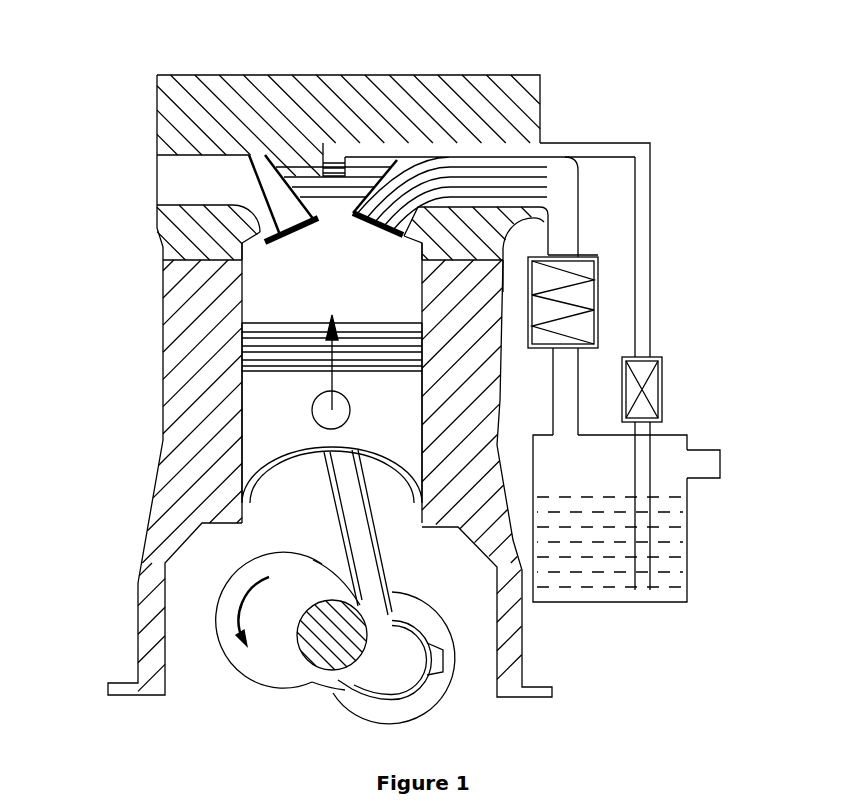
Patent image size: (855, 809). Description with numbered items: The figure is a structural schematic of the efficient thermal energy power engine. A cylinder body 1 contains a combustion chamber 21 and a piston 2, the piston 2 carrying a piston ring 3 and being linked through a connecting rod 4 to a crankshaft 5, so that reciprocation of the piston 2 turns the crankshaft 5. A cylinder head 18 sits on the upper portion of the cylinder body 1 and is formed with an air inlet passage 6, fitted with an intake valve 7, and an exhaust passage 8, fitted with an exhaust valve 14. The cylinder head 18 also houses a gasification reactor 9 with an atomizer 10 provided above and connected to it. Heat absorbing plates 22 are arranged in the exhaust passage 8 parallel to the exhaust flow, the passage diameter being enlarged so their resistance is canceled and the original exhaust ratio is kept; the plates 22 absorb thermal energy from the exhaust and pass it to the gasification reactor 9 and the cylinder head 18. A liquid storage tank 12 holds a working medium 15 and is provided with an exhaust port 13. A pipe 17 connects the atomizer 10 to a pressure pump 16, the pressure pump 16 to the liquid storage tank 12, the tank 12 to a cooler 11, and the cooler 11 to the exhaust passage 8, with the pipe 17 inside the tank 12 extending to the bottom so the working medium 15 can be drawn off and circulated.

The cylinder body 1 is at (255, 376).
The piston 2 is at (195, 445).
The piston ring 3 is at (215, 390).
The connecting rod 4 is at (360, 520).
The crankshaft 5 is at (262, 655).
The air inlet passage 6 is at (178, 188).
The intake valve 7 is at (262, 238).
The exhaust passage 8 is at (527, 177).
The gasification reactor 9 is at (345, 212).
The atomizer 10 is at (340, 156).
The cooler 11 is at (590, 290).
The liquid storage tank 12 is at (660, 445).
The exhaust port 13 is at (700, 470).
The exhaust valve 14 is at (398, 224).
The working medium 15 is at (582, 590).
The pressure pump 16 is at (655, 385).
The pipe 17 is at (645, 315).
The cylinder head 18 is at (453, 72).
The combustion chamber 21 is at (250, 348).
The heat absorbing plate 22 is at (523, 157).